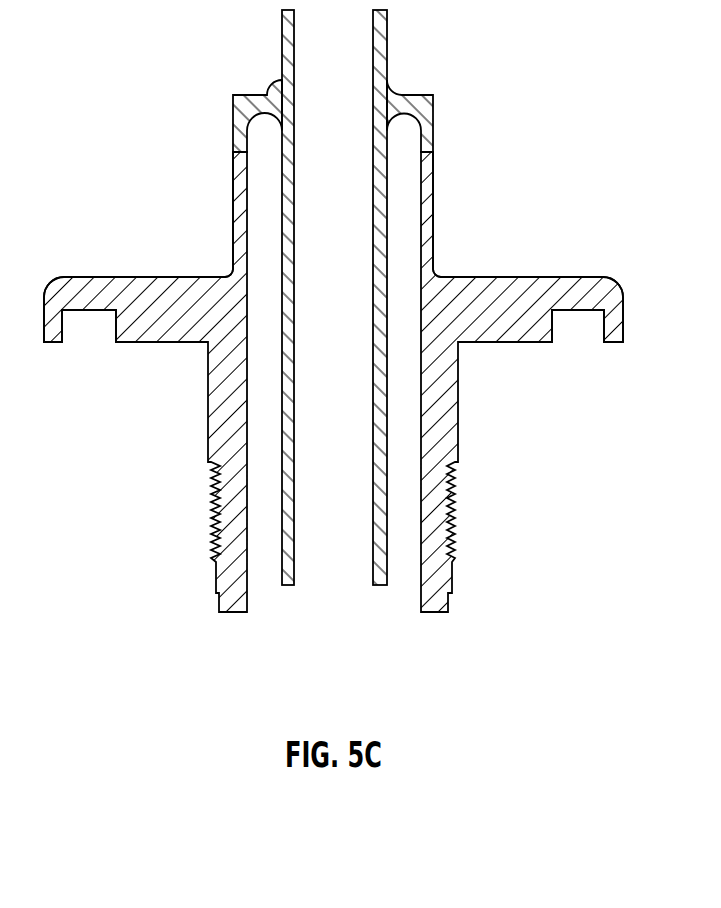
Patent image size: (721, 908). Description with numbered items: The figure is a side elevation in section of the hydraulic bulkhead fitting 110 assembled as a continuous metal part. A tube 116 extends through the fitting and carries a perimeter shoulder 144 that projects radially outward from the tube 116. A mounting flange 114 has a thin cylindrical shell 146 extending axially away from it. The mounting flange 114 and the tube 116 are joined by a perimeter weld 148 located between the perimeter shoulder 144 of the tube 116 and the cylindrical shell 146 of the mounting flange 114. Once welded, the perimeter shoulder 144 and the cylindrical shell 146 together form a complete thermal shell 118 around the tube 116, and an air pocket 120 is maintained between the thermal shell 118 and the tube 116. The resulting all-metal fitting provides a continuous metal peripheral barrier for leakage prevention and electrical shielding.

The hydraulic bulkhead fitting 110 is at (184, 45).
The mounting flange 114 is at (558, 277).
The tube 116 is at (291, 320).
The thermal shell 118 is at (445, 237).
The air pocket 120 is at (400, 403).
The perimeter shoulder 144 is at (413, 95).
The cylindrical shell 146 is at (434, 204).
The perimeter weld 148 is at (435, 152).